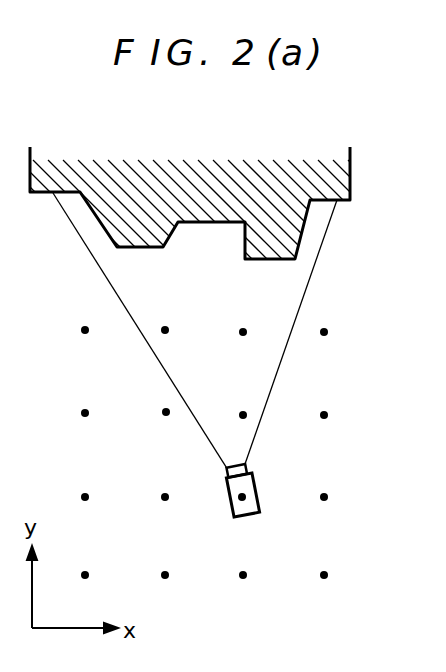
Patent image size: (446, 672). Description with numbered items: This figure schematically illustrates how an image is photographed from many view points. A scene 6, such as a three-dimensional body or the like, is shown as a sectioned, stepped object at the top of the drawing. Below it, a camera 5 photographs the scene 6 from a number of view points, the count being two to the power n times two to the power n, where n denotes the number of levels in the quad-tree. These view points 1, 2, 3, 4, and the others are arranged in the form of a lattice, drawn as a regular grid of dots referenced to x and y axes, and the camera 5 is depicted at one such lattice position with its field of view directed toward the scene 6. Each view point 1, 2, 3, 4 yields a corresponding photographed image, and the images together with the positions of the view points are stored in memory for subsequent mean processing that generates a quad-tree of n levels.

The view point 1 is at (83, 328).
The view point 2 is at (167, 327).
The view point 3 is at (83, 412).
The view point 4 is at (165, 410).
The camera 5 is at (256, 483).
The scene 6 is at (350, 163).